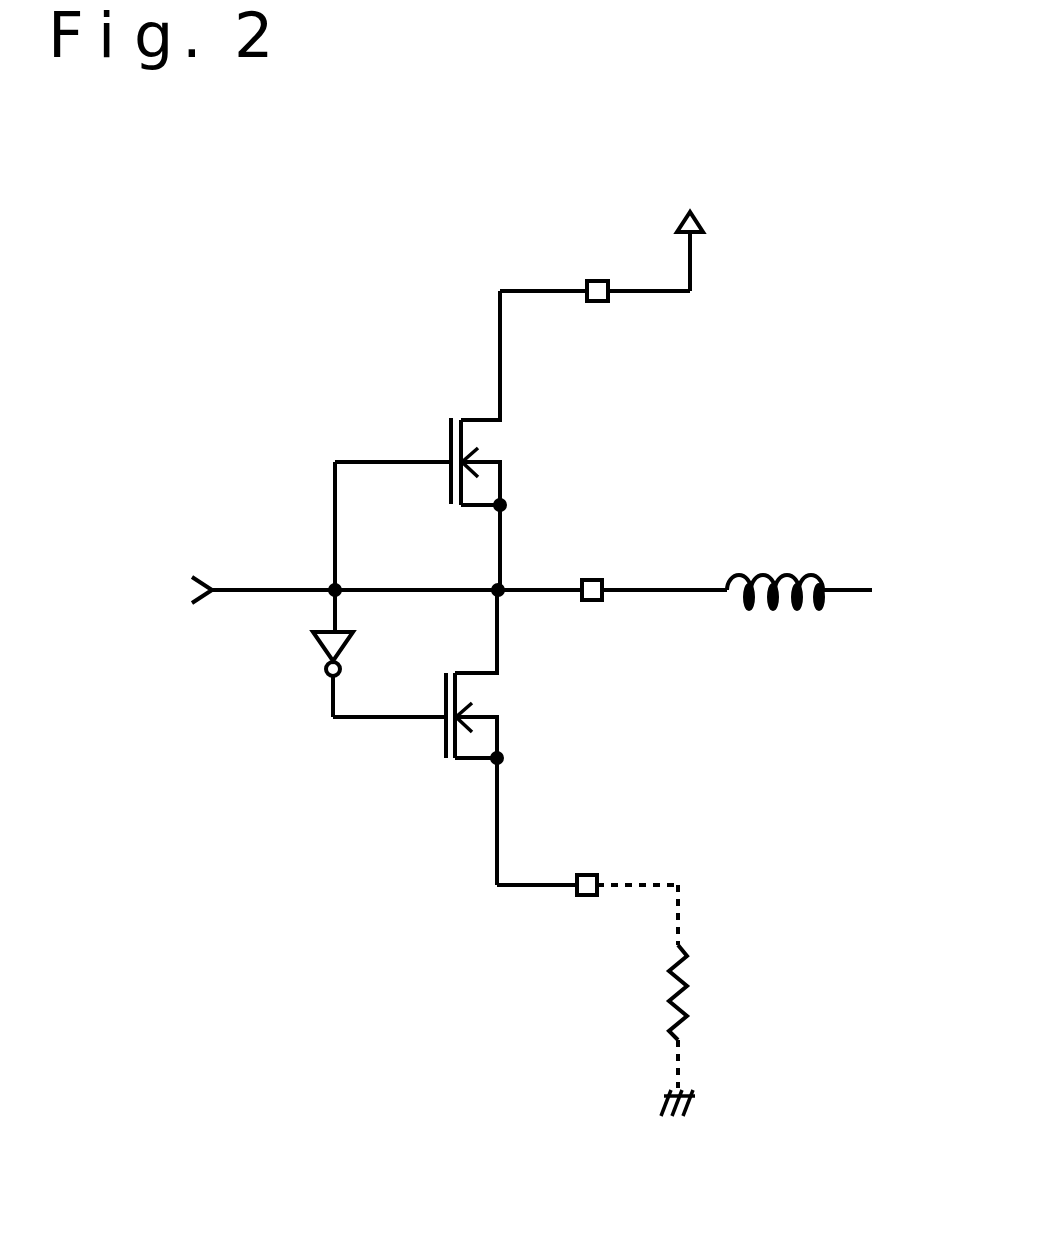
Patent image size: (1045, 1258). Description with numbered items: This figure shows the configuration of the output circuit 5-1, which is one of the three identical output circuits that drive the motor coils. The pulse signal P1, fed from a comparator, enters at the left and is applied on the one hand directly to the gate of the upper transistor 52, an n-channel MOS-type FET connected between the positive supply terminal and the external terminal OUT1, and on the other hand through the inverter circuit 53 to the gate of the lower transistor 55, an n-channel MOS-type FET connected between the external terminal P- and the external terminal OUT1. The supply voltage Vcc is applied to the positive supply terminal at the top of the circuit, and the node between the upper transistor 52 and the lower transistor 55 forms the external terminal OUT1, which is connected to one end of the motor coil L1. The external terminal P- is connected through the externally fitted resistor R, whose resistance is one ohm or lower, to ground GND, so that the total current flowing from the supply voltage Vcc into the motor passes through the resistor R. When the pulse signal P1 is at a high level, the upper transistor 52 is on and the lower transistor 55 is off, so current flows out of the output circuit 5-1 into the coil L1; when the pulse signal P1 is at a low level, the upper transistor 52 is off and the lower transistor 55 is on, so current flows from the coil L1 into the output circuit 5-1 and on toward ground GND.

The output circuit 5-1 is at (327, 234).
The upper transistor 52 is at (500, 443).
The inverter circuit 53 is at (318, 651).
The lower transistor 55 is at (493, 702).
The pulse signal P1 is at (316, 592).
The supply voltage Vcc is at (690, 229).
The external terminal OUT1 is at (600, 579).
The coil L1 is at (772, 568).
The external terminal P- is at (592, 875).
The resistor R is at (698, 996).
The ground GND is at (722, 1106).